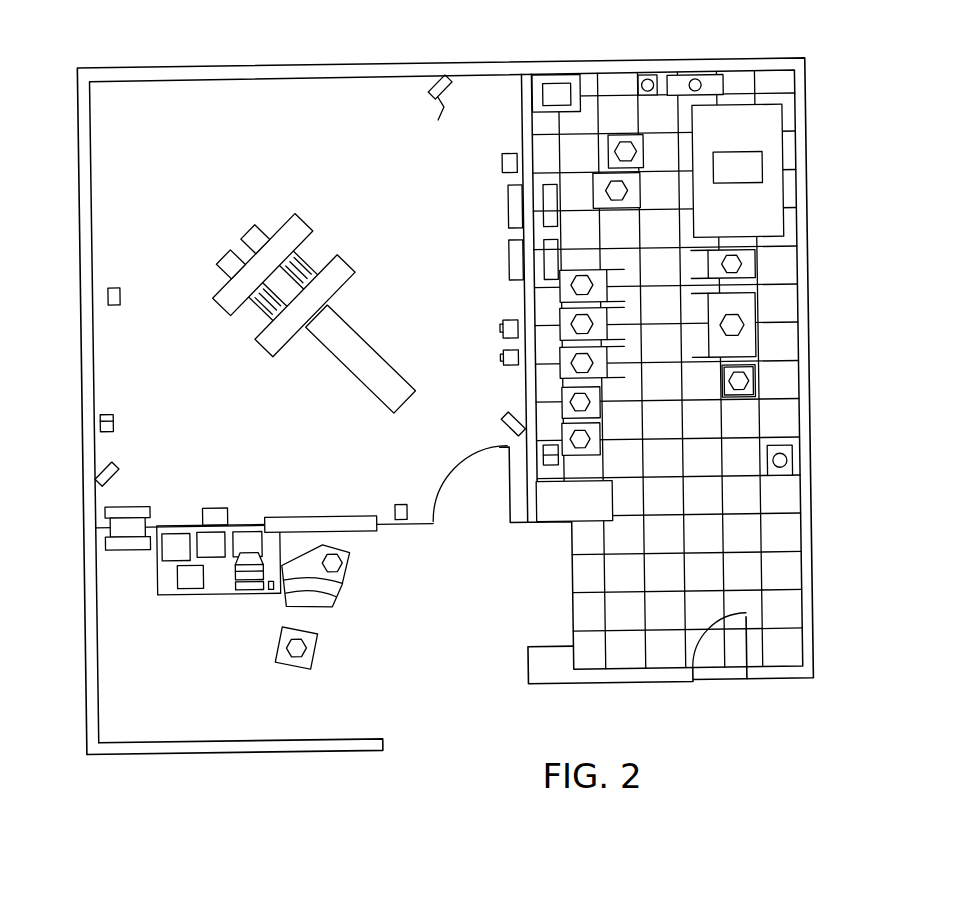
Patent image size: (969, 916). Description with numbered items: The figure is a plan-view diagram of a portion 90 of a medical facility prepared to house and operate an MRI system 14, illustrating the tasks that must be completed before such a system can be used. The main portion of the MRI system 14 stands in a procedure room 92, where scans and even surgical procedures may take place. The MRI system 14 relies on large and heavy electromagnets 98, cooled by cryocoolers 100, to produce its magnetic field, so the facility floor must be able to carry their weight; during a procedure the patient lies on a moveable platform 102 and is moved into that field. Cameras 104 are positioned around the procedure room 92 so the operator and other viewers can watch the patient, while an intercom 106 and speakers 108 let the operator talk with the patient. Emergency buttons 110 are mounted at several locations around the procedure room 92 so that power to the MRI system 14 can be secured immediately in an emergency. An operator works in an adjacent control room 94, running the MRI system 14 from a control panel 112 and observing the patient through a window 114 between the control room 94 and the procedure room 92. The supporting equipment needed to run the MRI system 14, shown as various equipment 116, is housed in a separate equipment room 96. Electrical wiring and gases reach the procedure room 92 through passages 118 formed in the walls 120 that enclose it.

The MRI system 14 is at (307, 273).
The portion of a medical facility 90 is at (503, 52).
The procedure room 92 is at (366, 219).
The control room 94 is at (368, 661).
The equipment room 96 is at (650, 434).
The electromagnets 98 is at (216, 310).
The cryocoolers 100 is at (219, 257).
The moveable platform 102 is at (363, 360).
The cameras 104 is at (115, 459).
The intercom 106 is at (108, 410).
The speakers 108 is at (117, 281).
The emergency buttons 110 is at (505, 329).
The control panel 112 is at (213, 587).
The window 114 is at (322, 520).
The equipment 116 is at (767, 129).
The passages 118 is at (127, 502).
The walls 120 is at (300, 65).